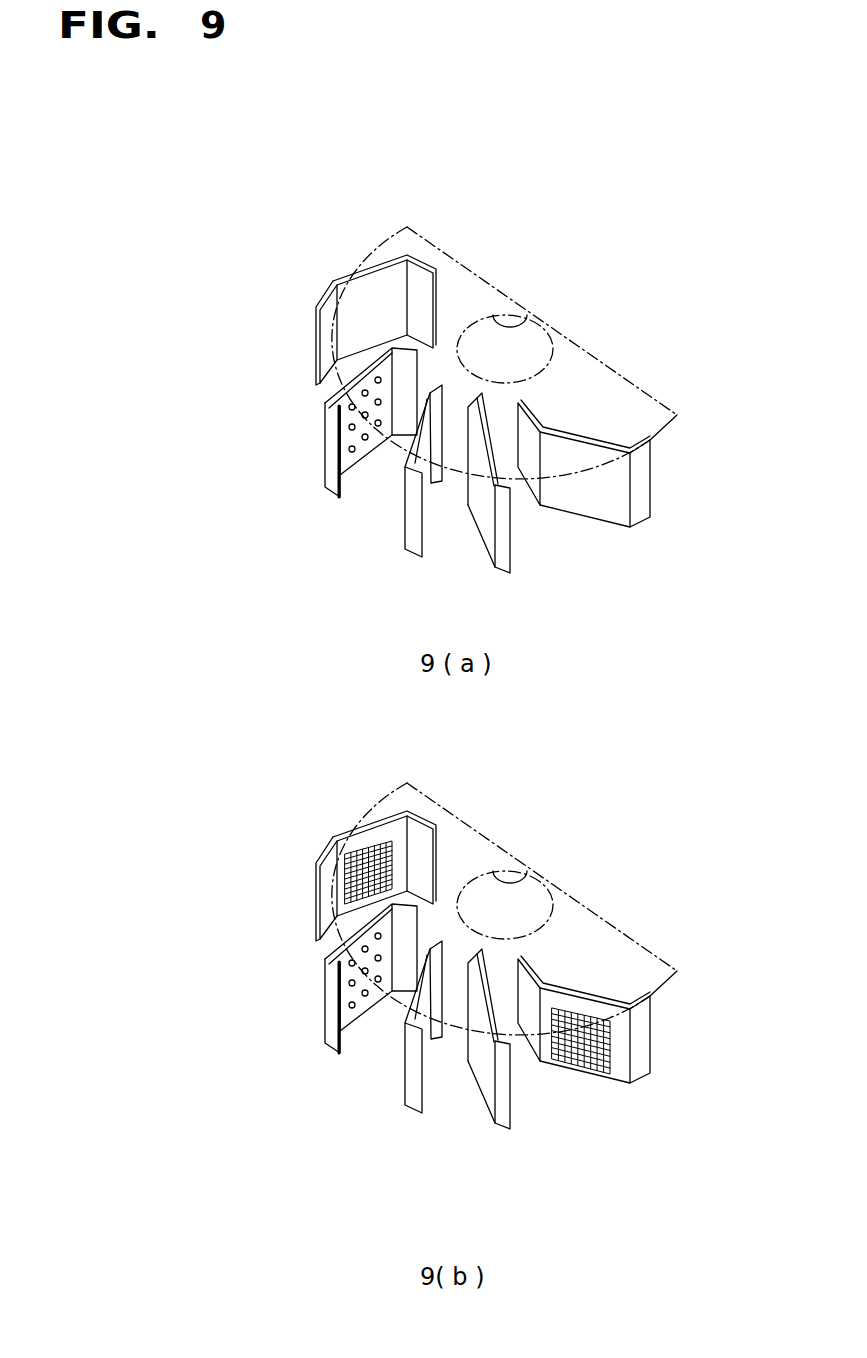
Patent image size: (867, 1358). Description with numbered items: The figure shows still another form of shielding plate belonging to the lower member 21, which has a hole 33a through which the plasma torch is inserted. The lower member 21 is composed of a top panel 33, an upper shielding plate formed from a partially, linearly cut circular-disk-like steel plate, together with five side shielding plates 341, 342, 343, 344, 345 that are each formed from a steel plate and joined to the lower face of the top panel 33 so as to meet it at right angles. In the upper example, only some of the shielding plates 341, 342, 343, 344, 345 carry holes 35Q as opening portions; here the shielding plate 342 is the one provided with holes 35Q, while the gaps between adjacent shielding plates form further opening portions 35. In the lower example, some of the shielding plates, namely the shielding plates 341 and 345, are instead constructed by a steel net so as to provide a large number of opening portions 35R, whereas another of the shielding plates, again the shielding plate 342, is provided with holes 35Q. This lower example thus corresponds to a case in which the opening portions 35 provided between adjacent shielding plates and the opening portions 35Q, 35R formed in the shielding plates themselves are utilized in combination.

The lower member 21 is at (679, 404).
The top panel 33 is at (583, 383).
The hole 33a is at (523, 320).
The shielding plate 341 is at (345, 848).
The shielding plate 342 is at (277, 1032).
The shielding plate 343 is at (413, 1057).
The shielding plate 344 is at (453, 1142).
The shielding plate 345 is at (625, 1112).
The opening portion 35 is at (457, 478).
The holes 35Q is at (301, 978).
The opening portions 35R is at (668, 1067).